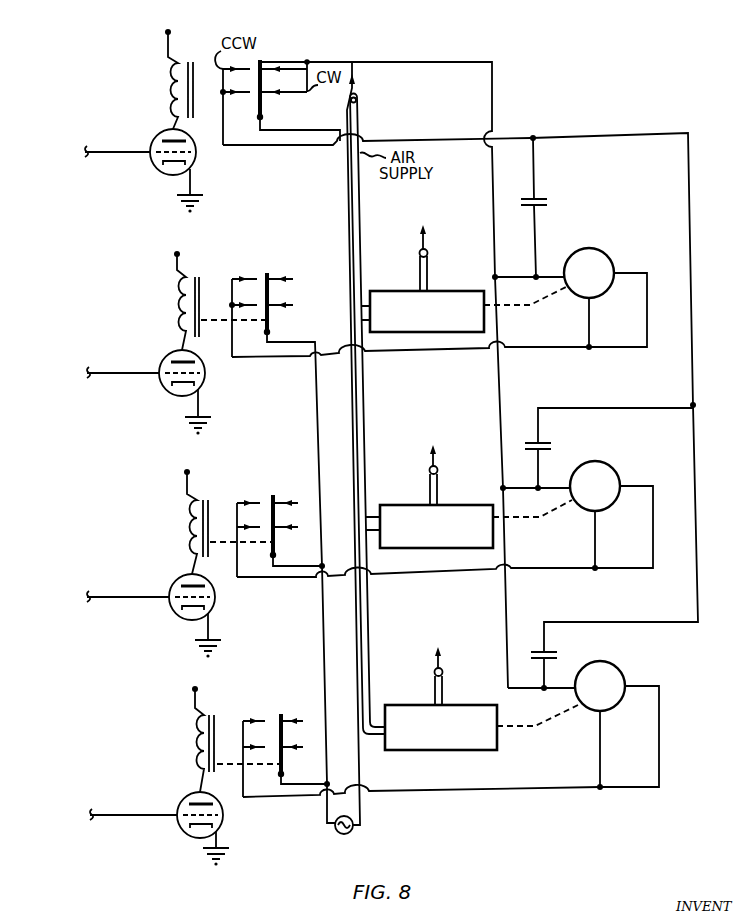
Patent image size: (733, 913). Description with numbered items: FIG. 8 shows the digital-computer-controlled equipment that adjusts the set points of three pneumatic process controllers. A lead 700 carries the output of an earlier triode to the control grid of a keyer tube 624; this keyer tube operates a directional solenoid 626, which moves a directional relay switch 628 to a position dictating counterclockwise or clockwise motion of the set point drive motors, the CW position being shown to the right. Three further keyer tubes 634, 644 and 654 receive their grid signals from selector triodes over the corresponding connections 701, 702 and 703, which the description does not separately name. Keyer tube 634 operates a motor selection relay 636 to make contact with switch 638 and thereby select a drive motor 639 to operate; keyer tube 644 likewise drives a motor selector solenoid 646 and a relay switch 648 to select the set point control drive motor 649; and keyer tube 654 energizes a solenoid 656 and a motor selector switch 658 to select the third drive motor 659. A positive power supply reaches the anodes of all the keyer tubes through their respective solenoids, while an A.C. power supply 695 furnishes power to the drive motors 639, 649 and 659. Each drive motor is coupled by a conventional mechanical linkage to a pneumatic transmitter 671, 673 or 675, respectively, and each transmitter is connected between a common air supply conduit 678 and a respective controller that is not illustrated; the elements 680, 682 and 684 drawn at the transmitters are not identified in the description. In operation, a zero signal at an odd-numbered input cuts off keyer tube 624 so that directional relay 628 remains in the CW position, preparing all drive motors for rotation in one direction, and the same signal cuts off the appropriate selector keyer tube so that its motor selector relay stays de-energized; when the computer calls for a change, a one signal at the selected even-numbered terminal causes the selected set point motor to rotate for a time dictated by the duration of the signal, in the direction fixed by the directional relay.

The lead 700 is at (128, 152).
The input terminal 701 is at (150, 373).
The input terminal 702 is at (151, 599).
The input terminal 703 is at (158, 817).
The directional solenoid 626 is at (169, 98).
The motor selection relay 636 is at (173, 323).
The motor selector solenoid 646 is at (181, 518).
The solenoid 656 is at (189, 736).
The keyer tube 624 is at (196, 153).
The keyer tube 634 is at (205, 374).
The keyer tube 644 is at (180, 584).
The keyer tube 654 is at (223, 818).
The directional relay switch 628 is at (262, 104).
The switch 638 is at (269, 318).
The relay switch 648 is at (280, 496).
The motor selector switch 658 is at (283, 714).
The air supply conduit 678 is at (359, 100).
The pneumatic transmitter 671 is at (417, 291).
The pneumatic transmitter 673 is at (415, 548).
The pneumatic transmitter 675 is at (441, 751).
The nozzle 680 is at (430, 256).
The nozzle 682 is at (440, 472).
The nozzle 684 is at (434, 677).
The drive motor 639 is at (602, 262).
The set point control drive motor 649 is at (607, 464).
The drive motor 659 is at (613, 665).
The A.C. power supply 695 is at (349, 835).